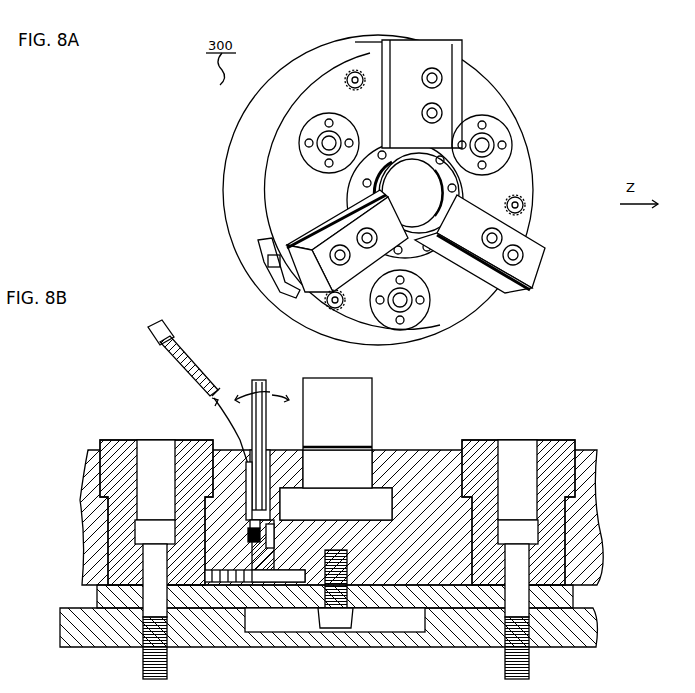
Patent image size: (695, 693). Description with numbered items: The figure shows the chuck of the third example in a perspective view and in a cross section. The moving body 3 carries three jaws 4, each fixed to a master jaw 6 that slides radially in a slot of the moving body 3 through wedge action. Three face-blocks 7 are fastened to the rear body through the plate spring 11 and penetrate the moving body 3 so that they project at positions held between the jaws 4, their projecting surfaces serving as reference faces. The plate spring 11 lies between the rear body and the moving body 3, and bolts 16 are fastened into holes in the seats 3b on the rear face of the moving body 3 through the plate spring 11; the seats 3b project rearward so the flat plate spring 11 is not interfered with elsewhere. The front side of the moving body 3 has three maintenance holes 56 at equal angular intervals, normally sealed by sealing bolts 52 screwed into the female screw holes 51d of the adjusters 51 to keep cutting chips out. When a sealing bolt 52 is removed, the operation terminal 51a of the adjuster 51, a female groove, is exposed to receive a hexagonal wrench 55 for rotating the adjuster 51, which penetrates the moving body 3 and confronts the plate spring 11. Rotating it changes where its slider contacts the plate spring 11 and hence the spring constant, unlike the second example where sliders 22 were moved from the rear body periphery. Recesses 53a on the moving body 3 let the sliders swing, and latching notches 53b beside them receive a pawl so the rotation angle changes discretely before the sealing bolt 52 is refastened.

In FIG. 8A, the moving body 3 is at (250, 186).
In FIG. 8B, the moving body 3 is at (442, 470).
In FIG. 8B, the seat 3b is at (430, 560).
In FIG. 8A, the jaw 4 is at (452, 50).
In FIG. 8B, the jaw 4 is at (372, 410).
In FIG. 8B, the master jaw 6 is at (360, 468).
In FIG. 8A, the face-block 7 is at (298, 140).
In FIG. 8B, the face-block 7 is at (128, 440).
In FIG. 8B, the plate spring 11 is at (578, 596).
In FIG. 8B, the bolt 16 is at (140, 666).
In FIG. 8B, the slider 22 is at (438, 648).
In FIG. 8B, the adjuster 51 is at (272, 582).
In FIG. 8B, the operation terminal 51a is at (276, 528).
In FIG. 8B, the female screw hole 51d is at (276, 538).
In FIG. 8A, the sealing bolt 52 is at (358, 70).
In FIG. 8B, the sealing bolt 52 is at (158, 350).
In FIG. 8B, the recess 53a is at (246, 470).
In FIG. 8B, the latching notch 53b is at (232, 582).
In FIG. 8B, the hexagonal wrench 55 is at (265, 420).
In FIG. 8A, the maintenance hole 56 is at (347, 78).
In FIG. 8B, the maintenance hole 56 is at (245, 462).